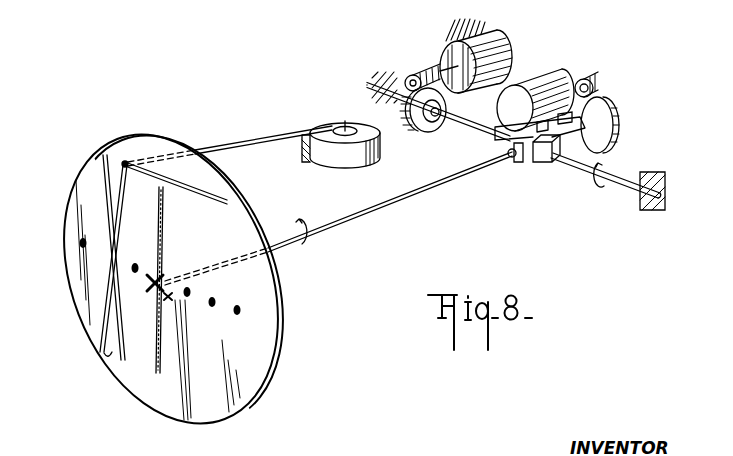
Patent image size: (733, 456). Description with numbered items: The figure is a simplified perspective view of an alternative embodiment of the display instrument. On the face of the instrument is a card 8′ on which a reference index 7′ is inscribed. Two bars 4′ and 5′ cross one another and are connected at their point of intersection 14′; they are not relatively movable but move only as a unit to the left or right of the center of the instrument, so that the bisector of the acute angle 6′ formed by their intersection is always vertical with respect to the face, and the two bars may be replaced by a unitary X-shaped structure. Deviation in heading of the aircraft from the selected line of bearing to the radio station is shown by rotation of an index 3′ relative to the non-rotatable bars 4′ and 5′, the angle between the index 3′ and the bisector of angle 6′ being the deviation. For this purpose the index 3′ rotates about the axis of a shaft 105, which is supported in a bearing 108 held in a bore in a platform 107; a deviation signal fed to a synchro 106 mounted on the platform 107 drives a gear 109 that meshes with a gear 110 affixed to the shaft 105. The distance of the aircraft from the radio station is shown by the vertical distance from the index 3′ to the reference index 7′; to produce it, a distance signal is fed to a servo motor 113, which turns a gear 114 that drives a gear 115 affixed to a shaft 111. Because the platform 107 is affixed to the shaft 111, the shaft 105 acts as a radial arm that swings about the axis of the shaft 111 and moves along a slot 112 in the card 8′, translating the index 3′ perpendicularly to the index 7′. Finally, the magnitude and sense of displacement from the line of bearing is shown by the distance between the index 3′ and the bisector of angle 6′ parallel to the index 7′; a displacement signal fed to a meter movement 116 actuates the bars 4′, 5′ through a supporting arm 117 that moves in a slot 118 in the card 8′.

The index 3′ is at (207, 274).
The bar 4′ is at (105, 340).
The bar 5′ is at (135, 358).
The acute angle 6′ is at (107, 295).
The reference index 7′ is at (233, 309).
The card 8′ is at (188, 418).
The point of intersection 14′ is at (140, 238).
The shaft 105 is at (358, 210).
The synchro 106 is at (538, 77).
The platform 107 is at (513, 148).
The bearing 108 is at (516, 157).
The gear 109 is at (598, 80).
The gear 110 is at (620, 133).
The shaft 111 is at (460, 124).
The slot 112 is at (163, 232).
The servo motor 113 is at (500, 42).
The gear 114 is at (413, 75).
The gear 115 is at (412, 132).
The meter movement 116 is at (330, 153).
The supporting arm 117 is at (265, 140).
The slot 118 is at (195, 152).